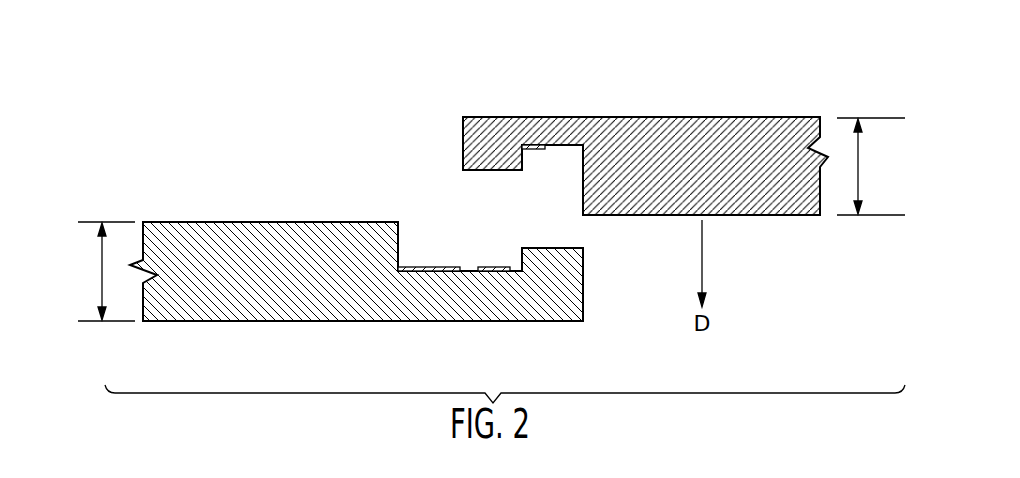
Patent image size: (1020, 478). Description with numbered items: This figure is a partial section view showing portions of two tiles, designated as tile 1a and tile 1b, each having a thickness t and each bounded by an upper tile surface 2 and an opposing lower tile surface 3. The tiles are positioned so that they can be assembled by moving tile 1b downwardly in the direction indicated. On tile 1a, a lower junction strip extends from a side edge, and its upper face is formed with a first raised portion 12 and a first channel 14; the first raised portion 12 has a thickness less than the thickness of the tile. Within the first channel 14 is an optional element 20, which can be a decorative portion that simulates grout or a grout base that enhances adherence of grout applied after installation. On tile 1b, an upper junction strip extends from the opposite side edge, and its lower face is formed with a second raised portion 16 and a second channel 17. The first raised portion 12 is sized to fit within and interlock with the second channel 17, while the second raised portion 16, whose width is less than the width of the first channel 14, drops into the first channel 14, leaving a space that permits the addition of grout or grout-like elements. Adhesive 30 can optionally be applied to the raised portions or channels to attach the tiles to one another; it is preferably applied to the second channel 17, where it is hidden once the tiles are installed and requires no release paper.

The tile 1a is at (291, 283).
The tile 1b is at (704, 168).
The upper tile surface 2 is at (260, 222).
The lower tile surface 3 is at (253, 321).
The first raised portion 12 is at (544, 248).
The first channel 14 is at (398, 240).
The second raised portion 16 is at (485, 171).
The second channel 17 is at (558, 147).
The optional element within first channel 20 is at (430, 267).
The adhesive 30 is at (508, 267).